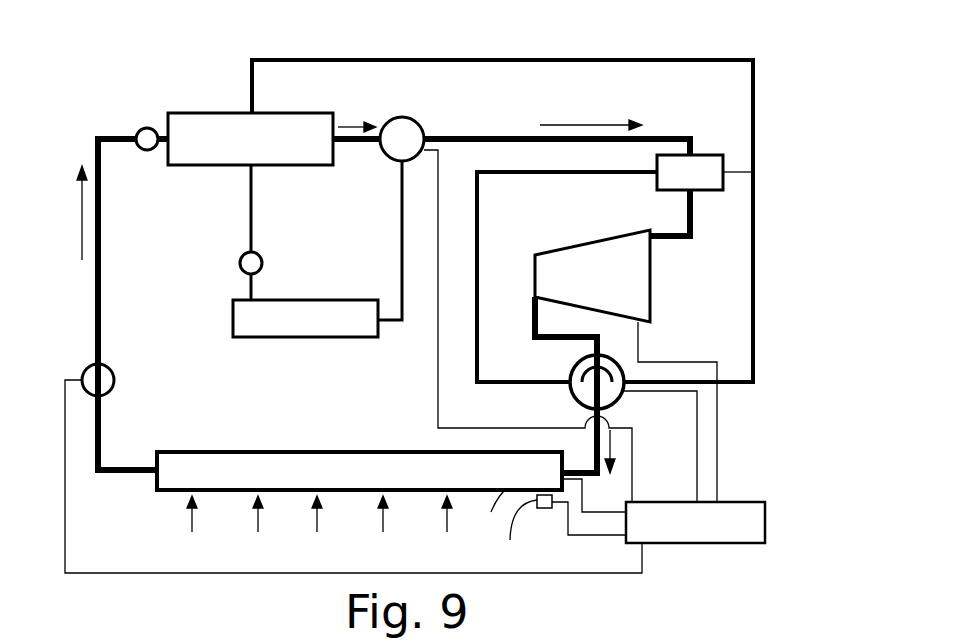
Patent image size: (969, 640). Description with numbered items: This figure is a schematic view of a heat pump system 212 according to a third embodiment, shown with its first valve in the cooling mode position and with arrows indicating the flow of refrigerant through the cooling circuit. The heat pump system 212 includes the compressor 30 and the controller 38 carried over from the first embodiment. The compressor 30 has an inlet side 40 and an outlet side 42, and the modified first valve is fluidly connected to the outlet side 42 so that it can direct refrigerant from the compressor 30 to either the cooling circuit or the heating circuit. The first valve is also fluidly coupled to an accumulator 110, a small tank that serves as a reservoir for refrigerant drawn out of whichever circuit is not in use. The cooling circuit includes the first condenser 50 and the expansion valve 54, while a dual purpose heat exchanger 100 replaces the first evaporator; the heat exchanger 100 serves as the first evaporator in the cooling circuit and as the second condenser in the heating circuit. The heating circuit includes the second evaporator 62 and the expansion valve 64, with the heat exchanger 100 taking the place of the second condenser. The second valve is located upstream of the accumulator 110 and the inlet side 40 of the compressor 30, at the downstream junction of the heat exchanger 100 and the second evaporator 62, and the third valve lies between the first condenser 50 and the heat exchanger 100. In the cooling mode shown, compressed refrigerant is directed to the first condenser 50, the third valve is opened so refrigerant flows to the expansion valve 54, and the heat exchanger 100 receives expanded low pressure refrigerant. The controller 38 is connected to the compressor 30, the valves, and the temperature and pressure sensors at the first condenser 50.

The heat pump system 212 is at (448, 289).
The expansion valve 54 is at (146, 127).
The heat exchanger 100 is at (280, 166).
The accumulator 110 is at (723, 172).
The inlet side 40 is at (655, 232).
The compressor 30 is at (590, 256).
The outlet side 42 is at (535, 285).
The expansion valve 64 is at (240, 268).
The second evaporator 62 is at (255, 337).
The first condenser 50 is at (152, 482).
The controller 38 is at (700, 533).